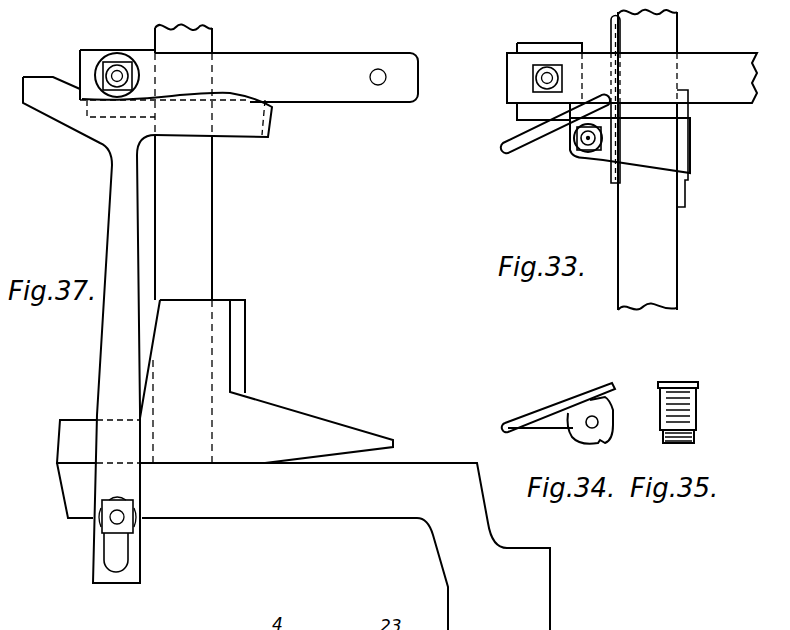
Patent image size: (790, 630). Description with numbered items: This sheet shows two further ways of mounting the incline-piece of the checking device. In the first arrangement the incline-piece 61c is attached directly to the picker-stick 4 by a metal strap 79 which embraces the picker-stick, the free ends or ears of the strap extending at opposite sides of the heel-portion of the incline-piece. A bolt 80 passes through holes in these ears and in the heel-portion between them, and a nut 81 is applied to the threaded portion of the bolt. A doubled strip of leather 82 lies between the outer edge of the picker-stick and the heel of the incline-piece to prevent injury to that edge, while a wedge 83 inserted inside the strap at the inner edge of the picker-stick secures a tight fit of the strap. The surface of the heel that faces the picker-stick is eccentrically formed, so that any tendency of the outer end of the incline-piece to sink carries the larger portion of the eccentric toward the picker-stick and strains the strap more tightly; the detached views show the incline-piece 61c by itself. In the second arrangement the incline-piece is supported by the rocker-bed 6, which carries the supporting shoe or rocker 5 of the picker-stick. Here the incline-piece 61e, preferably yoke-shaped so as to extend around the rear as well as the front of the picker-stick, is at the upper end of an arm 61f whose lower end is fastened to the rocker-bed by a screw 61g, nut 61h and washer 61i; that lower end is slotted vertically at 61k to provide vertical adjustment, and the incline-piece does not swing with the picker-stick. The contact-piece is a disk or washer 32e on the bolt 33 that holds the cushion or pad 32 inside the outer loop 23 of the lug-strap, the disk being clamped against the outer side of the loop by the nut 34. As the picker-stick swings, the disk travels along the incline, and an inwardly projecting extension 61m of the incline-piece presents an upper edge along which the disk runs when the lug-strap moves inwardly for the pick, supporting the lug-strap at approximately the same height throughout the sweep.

In FIG. 37, the picker-stick 4 is at (214, 211).
In FIG. 33, the picker-stick 4 is at (685, 281).
In FIG. 37, the supporting shoe or rocker 5 is at (338, 422).
In FIG. 37, the rocker-bed 6 is at (233, 511).
In FIG. 37, the outer loop of the lug-strap 23 is at (324, 104).
In FIG. 33, the outer loop of the lug-strap 23 is at (726, 107).
In FIG. 37, the cushion or pad 32 is at (138, 39).
In FIG. 37, the disk or washer 32e is at (95, 66).
In FIG. 37, the bolt 33 is at (119, 75).
In FIG. 37, the nut 34 is at (133, 88).
In FIG. 33, the incline-piece 61c is at (541, 150).
In FIG. 34, the incline-piece 61c is at (559, 428).
In FIG. 35, the incline-piece 61c is at (702, 407).
In FIG. 37, the incline-piece 61e is at (63, 119).
In FIG. 37, the arm 61f is at (110, 233).
In FIG. 37, the screw 61g is at (109, 521).
In FIG. 37, the nut 61h is at (133, 532).
In FIG. 37, the washer 61i is at (122, 497).
In FIG. 37, the slot 61k is at (118, 570).
In FIG. 37, the inwardly projecting extension 61m is at (243, 136).
In FIG. 33, the metal strap 79 is at (636, 171).
In FIG. 33, the bolt 80 is at (583, 155).
In FIG. 33, the nut 81 is at (598, 165).
In FIG. 33, the doubled strip of leather 82 is at (611, 37).
In FIG. 33, the wedge 83 is at (688, 189).